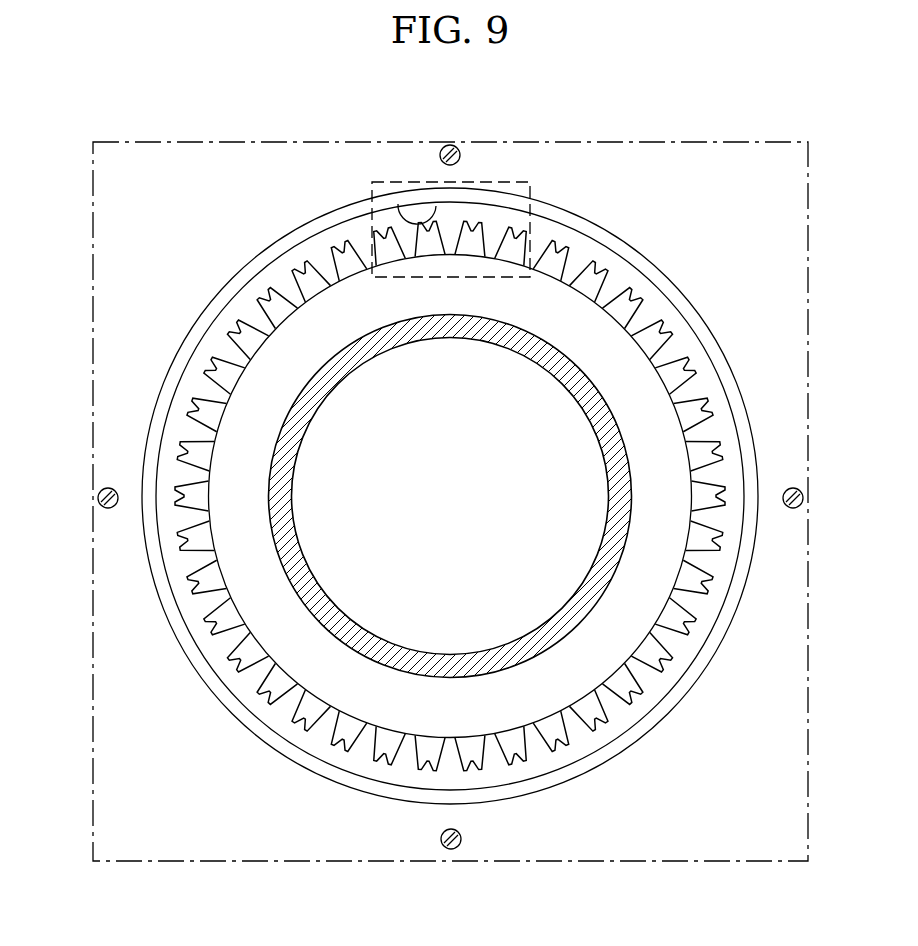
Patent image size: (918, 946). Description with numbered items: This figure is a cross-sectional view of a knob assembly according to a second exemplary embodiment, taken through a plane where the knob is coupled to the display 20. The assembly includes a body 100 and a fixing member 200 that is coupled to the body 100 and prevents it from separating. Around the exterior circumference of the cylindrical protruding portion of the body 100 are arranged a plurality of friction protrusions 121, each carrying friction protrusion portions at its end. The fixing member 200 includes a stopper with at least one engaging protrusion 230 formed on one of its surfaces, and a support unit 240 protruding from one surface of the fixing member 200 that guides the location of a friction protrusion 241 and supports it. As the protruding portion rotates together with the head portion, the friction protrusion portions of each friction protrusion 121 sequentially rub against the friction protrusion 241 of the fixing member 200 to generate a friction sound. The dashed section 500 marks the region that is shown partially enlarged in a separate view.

The display 20 is at (638, 168).
The body 100 is at (380, 693).
The friction protrusion 121 is at (513, 758).
The fixing member 200 is at (620, 712).
The engaging protrusion 230 is at (630, 505).
The support unit 240 is at (385, 190).
The friction protrusion 241 is at (434, 212).
The section 500 is at (502, 181).